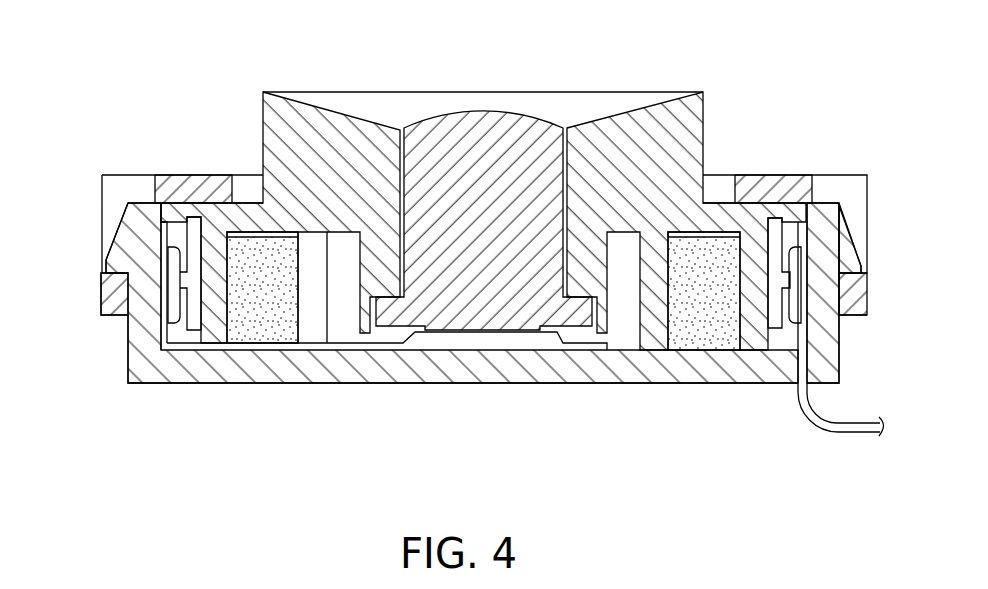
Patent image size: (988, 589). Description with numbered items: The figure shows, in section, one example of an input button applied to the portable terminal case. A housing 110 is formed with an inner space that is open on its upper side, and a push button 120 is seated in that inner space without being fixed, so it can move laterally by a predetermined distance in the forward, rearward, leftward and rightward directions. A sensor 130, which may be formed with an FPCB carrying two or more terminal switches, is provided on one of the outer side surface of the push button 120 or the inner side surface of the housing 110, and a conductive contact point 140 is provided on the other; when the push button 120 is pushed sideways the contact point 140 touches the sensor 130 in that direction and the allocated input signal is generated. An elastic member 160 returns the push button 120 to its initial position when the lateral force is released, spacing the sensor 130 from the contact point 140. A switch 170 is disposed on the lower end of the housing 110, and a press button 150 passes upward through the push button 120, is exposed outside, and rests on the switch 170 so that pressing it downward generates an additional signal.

The housing 110 is at (148, 373).
The push button 120 is at (655, 122).
The sensor 130 is at (163, 293).
The contact point 140 is at (195, 238).
The press button 150 is at (481, 132).
The elastic member 160 is at (265, 332).
The switch 170 is at (498, 342).